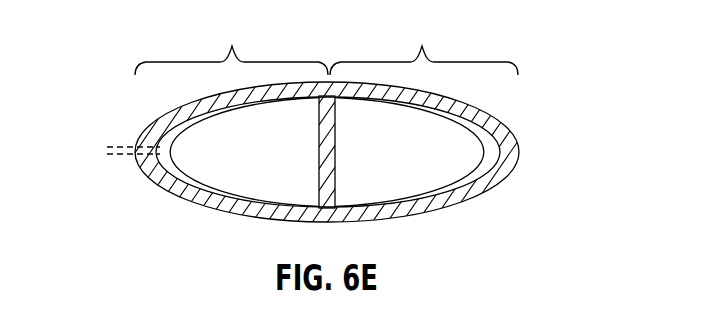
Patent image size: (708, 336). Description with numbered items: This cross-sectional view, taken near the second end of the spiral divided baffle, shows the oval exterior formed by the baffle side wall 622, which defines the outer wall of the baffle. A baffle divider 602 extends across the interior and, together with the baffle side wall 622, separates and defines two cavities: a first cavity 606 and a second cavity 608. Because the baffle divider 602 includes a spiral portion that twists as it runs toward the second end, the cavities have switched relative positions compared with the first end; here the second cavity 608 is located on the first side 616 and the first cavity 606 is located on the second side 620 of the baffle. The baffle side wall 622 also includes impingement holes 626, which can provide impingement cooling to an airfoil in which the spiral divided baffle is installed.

The baffle divider 602 is at (336, 148).
The first cavity 606 is at (447, 174).
The second cavity 608 is at (275, 172).
The first side 616 is at (231, 43).
The second side 620 is at (424, 43).
The baffle side wall 622 is at (216, 206).
The impingement holes 626 is at (107, 150).